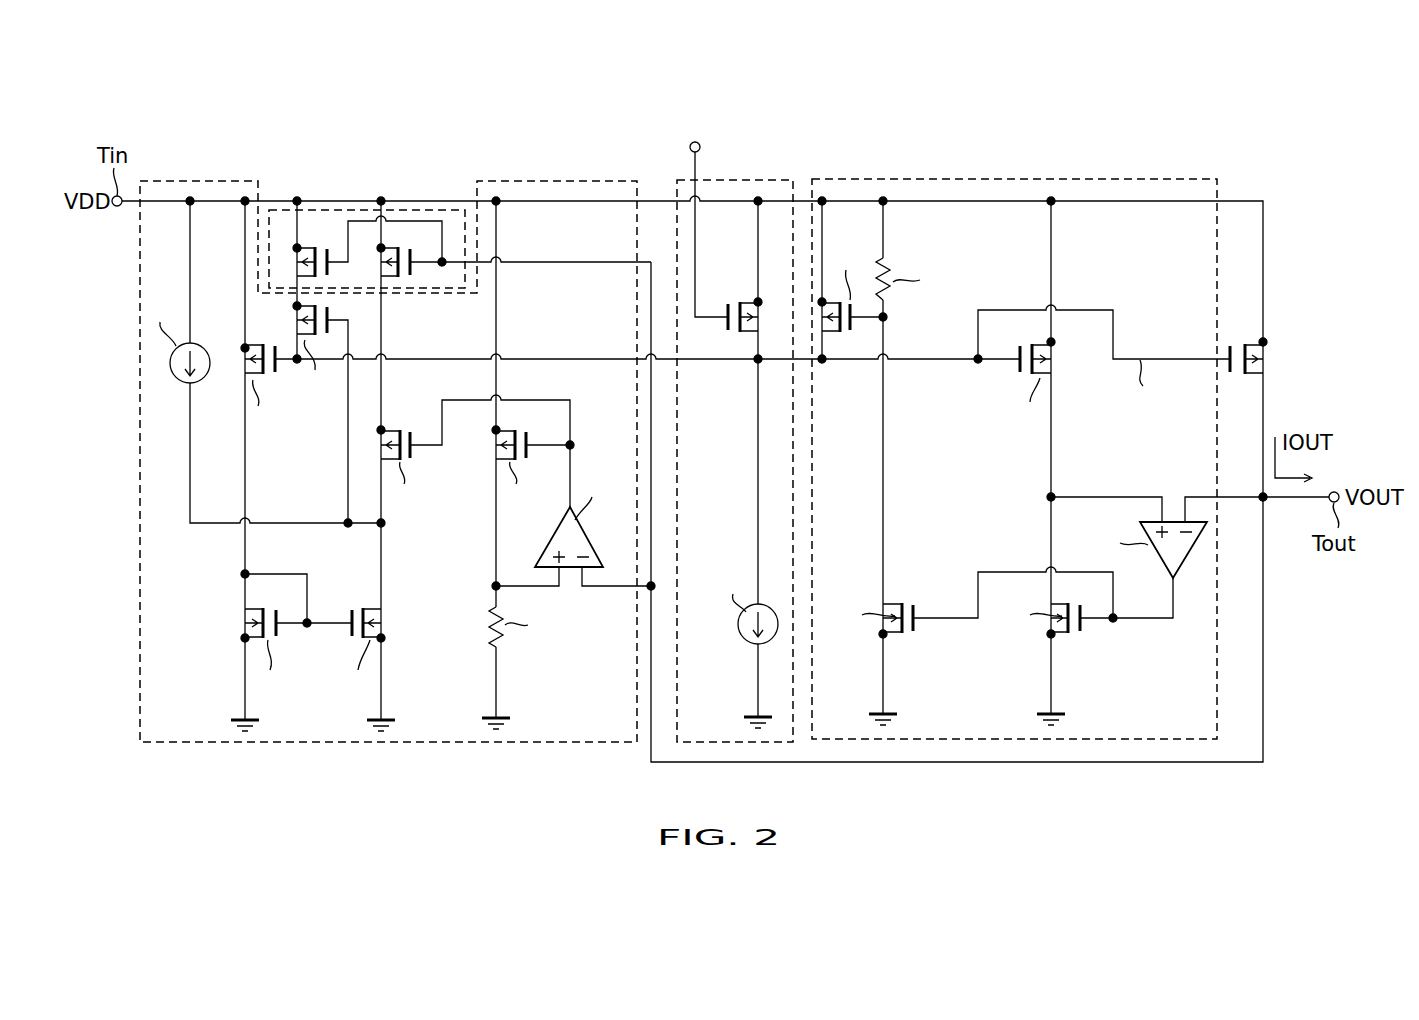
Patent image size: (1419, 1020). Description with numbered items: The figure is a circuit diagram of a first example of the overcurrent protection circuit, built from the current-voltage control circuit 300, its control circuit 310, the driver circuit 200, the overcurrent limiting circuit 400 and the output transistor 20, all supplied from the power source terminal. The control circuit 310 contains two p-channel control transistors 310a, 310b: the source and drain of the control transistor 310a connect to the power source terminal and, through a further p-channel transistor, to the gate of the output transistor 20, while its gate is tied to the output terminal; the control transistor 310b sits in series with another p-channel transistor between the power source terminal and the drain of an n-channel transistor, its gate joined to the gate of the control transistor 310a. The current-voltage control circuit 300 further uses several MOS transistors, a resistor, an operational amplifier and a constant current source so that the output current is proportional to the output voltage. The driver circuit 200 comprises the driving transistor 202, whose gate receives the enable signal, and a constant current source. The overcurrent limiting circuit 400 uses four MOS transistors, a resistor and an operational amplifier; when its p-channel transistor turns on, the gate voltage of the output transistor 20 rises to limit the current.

The output transistor 20 is at (1265, 372).
The driver circuit 200 is at (740, 180).
The driving transistor 202 is at (740, 300).
The current-voltage control circuit 300 is at (562, 180).
The control circuit 310 is at (420, 208).
The control transistor 310a is at (333, 258).
The control transistor 310b is at (418, 278).
The overcurrent limiting circuit 400 is at (1010, 178).